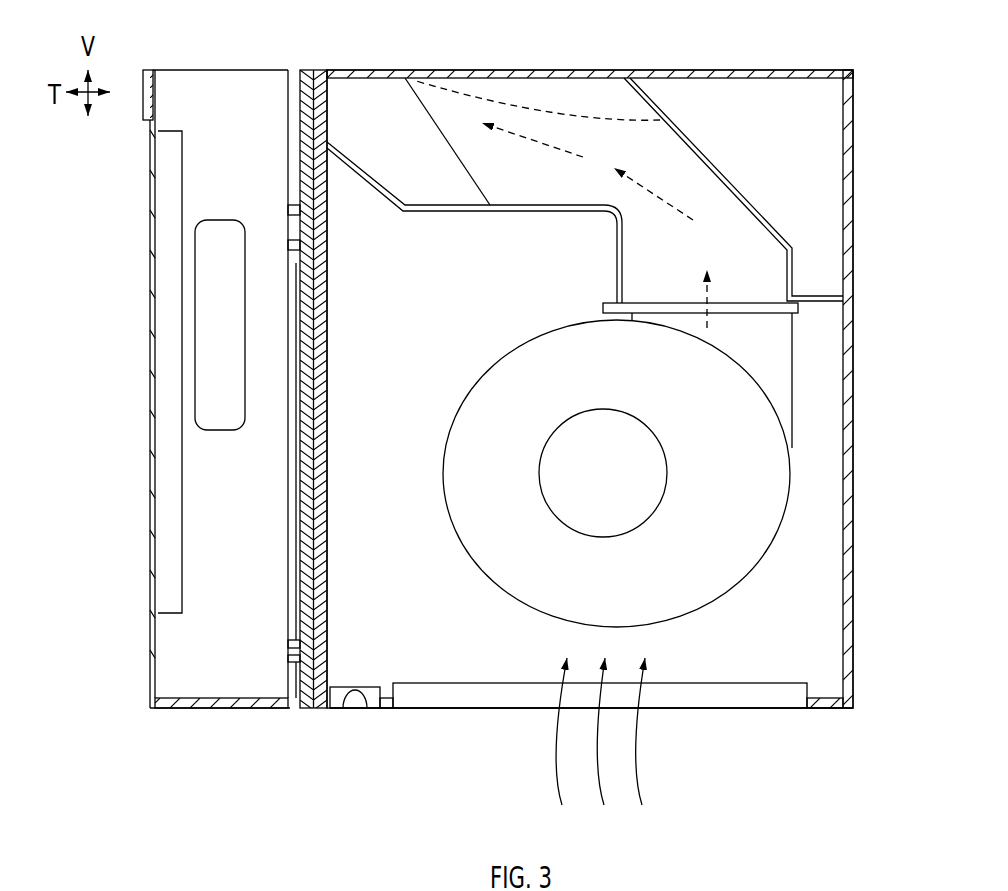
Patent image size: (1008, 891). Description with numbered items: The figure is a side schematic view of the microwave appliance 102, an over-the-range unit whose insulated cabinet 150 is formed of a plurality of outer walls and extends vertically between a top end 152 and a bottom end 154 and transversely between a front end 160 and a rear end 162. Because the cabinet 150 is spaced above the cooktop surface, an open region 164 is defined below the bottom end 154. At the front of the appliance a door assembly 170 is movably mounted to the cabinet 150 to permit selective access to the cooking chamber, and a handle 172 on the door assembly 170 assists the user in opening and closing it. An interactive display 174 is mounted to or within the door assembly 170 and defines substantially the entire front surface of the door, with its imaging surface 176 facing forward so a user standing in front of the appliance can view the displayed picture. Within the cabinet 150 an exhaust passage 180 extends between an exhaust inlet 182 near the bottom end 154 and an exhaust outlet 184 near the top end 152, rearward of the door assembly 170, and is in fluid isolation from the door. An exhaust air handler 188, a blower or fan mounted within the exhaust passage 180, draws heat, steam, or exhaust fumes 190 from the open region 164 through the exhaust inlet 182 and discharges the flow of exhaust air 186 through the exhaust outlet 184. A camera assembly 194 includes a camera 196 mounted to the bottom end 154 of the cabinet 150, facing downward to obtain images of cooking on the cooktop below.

The microwave appliance 102 is at (891, 103).
The cabinet 150 is at (763, 69).
The top end 152 is at (679, 56).
The bottom end 154 is at (824, 726).
The front end 160 is at (297, 696).
The rear end 162 is at (873, 305).
The open region 164 is at (734, 812).
The door assembly 170 is at (151, 389).
The handle 172 is at (219, 218).
The interactive display 174 is at (166, 445).
The imaging surface 176 is at (148, 409).
The exhaust passage 180 is at (743, 217).
The exhaust inlet 182 is at (719, 712).
The exhaust outlet 184 is at (358, 67).
The flow of exhaust air 186 is at (661, 195).
The exhaust air handler 188 is at (794, 480).
The exhaust fumes 190 is at (554, 745).
The camera assembly 194 is at (369, 685).
The camera 196 is at (354, 711).